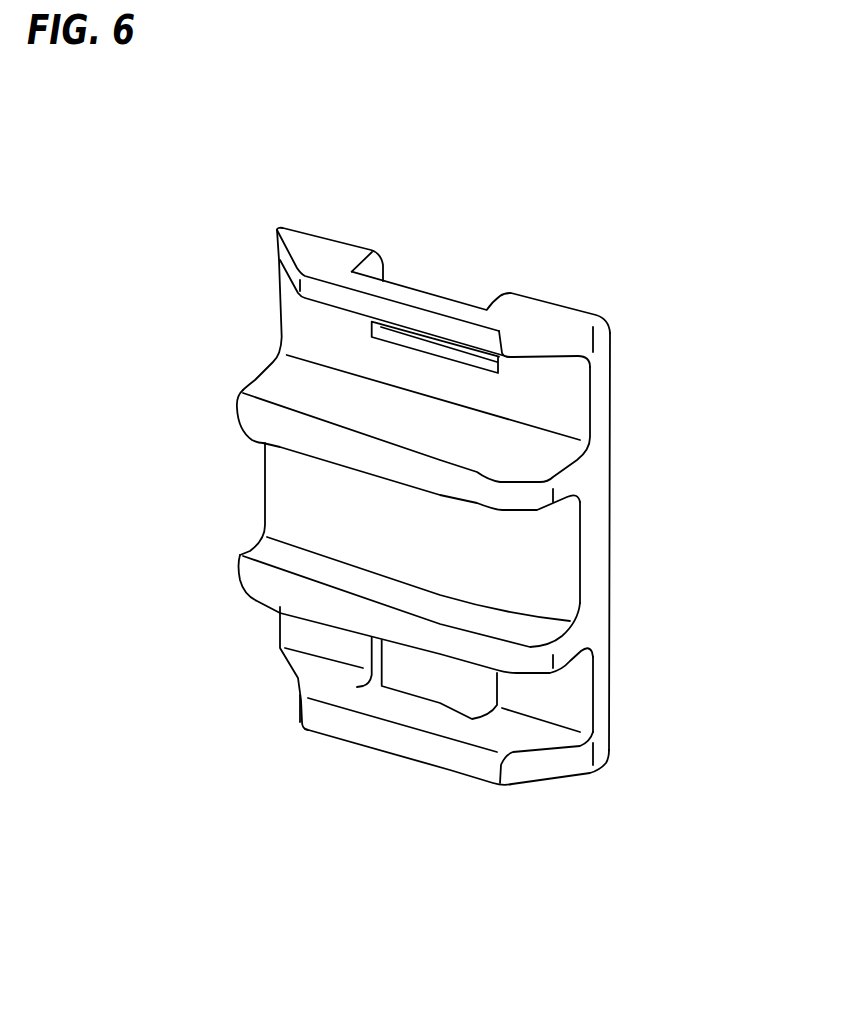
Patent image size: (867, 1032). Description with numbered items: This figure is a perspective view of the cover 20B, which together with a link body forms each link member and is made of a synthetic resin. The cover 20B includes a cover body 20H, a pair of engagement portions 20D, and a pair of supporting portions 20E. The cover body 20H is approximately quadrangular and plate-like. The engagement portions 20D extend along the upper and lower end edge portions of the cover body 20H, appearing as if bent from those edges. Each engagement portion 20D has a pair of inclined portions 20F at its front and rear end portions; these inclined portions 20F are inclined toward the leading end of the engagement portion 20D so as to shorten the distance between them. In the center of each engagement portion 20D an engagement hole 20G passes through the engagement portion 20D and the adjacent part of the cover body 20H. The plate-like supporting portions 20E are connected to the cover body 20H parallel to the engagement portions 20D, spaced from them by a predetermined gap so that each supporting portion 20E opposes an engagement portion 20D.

The cover 20B is at (515, 228).
The engagement portion 20D is at (323, 263).
The supporting portion 20E is at (523, 458).
The inclined portion 20F is at (285, 260).
The engagement hole 20G is at (427, 297).
The cover body 20H is at (597, 563).